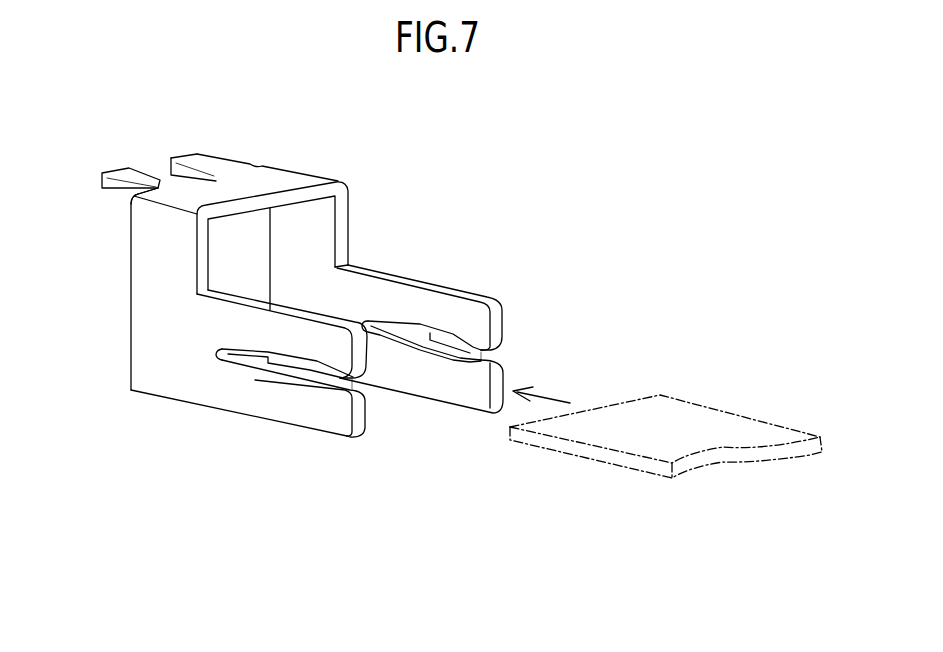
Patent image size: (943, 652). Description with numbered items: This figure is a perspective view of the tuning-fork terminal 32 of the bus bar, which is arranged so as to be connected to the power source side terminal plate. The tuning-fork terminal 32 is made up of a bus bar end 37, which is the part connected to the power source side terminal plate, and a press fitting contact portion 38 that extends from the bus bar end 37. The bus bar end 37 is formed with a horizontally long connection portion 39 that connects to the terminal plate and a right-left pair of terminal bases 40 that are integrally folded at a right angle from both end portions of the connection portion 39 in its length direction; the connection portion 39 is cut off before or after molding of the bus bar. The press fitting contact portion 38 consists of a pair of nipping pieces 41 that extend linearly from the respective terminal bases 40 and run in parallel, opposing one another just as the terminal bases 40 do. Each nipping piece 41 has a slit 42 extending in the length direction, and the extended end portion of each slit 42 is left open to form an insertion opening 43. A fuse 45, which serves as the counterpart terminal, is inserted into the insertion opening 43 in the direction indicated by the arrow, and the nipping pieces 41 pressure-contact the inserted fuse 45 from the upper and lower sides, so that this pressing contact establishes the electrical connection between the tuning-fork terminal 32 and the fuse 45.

The tuning-fork terminal 32 is at (378, 208).
The bus bar end 37 is at (120, 222).
The press fitting contact portion 38 is at (403, 259).
The horizontally long connection portion 39 is at (230, 187).
The terminal bases 40 is at (300, 237).
The nipping pieces 41 is at (482, 291).
The slit 42 is at (287, 377).
The insertion opening 43 is at (488, 351).
The fuse 45 is at (697, 427).